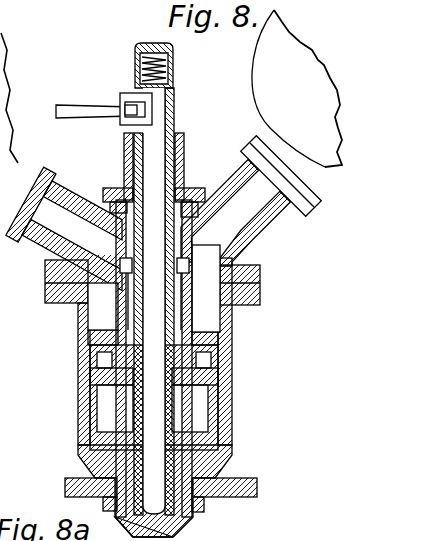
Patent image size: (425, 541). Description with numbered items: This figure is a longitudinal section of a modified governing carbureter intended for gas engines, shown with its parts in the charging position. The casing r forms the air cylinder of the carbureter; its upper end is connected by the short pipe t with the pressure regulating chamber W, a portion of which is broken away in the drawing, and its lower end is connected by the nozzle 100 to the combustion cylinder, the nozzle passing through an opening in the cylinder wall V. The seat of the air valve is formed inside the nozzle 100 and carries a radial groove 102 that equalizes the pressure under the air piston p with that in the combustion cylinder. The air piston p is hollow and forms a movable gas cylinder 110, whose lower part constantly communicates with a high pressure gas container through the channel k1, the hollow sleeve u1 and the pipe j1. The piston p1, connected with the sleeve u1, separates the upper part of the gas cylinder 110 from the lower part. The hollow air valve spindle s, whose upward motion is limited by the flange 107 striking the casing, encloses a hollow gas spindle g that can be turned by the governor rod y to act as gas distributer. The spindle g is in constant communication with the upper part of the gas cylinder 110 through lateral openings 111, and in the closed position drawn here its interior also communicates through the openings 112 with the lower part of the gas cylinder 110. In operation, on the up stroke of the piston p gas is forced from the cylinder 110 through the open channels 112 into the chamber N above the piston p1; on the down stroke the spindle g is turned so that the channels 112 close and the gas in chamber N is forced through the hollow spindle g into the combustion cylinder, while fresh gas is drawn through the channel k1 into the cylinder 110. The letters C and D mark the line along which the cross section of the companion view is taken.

The pressure regulating chamber W is at (297, 88).
The short pipe t is at (262, 226).
The pipe j1 is at (63, 228).
The casing of the governing carbureter r is at (88, 318).
The hollow sleeve u1 is at (261, 306).
The combustion cylinder wall V is at (72, 484).
The radial groove 102 is at (195, 522).
The channel k1 is at (90, 411).
The gas cylinder 110 is at (193, 418).
The air piston p is at (95, 373).
The piston p1 is at (226, 393).
The lateral openings 111 is at (90, 400).
The openings 112 is at (227, 403).
The nozzle 100 is at (130, 520).
The spindle of the air valve s is at (169, 155).
The flange 107 is at (124, 190).
The hollow gas spindle g is at (164, 108).
The governor rod y is at (73, 105).
The chamber N is at (100, 306).
The section line C—D C is at (55, 340).
The section line C— D is at (297, 367).